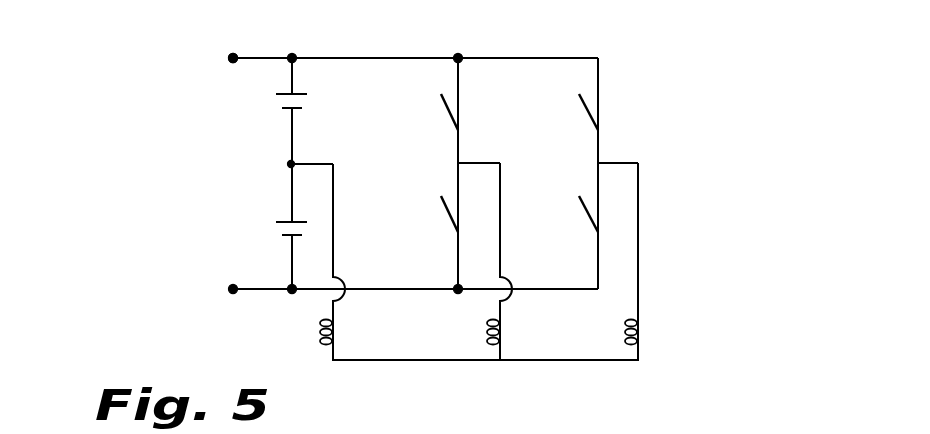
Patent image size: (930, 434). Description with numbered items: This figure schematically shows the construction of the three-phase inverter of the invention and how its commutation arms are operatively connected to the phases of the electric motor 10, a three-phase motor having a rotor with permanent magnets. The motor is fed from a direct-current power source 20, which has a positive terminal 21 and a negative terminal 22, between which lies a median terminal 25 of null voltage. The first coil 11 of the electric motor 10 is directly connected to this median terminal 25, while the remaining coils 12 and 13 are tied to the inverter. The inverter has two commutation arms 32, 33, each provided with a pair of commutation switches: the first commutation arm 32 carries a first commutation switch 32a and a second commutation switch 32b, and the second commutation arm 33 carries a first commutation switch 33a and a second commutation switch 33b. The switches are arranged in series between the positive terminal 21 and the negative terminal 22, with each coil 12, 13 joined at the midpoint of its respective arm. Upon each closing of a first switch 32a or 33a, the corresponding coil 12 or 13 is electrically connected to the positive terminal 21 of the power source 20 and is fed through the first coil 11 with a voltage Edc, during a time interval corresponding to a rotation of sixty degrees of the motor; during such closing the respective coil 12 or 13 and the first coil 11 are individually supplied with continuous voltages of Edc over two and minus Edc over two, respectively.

The electric motor 10 is at (654, 266).
The first coil 11 is at (310, 330).
The coil 12 is at (478, 324).
The coil 13 is at (618, 325).
The power source 20 is at (228, 50).
The positive terminal 21 is at (289, 61).
The negative terminal 22 is at (290, 286).
The median terminal 25 is at (271, 159).
The commutation arm 32 is at (432, 162).
The first commutation switch 32a is at (447, 105).
The second commutation switch 32b is at (447, 212).
The commutation arm 33 is at (587, 165).
The first commutation switch 33a is at (590, 110).
The second commutation switch 33b is at (588, 217).